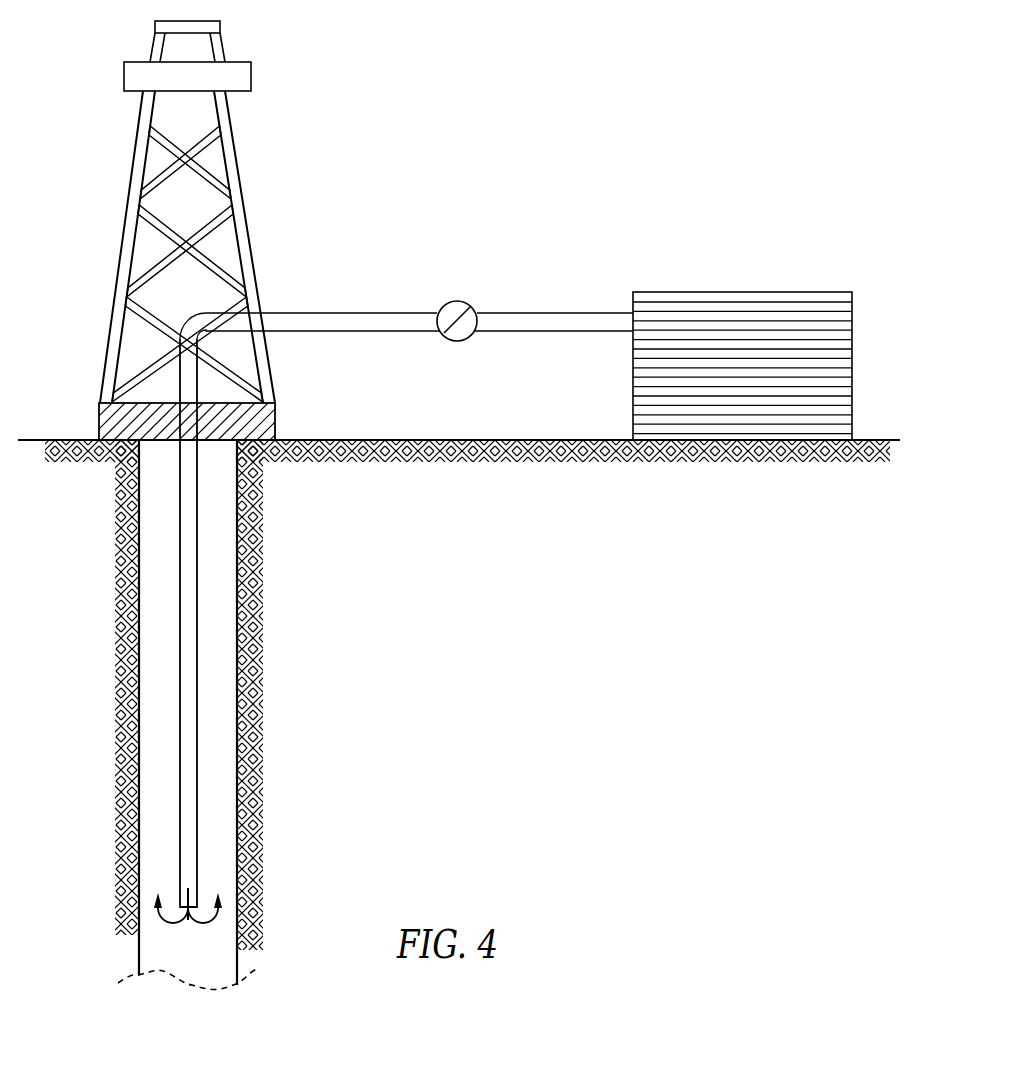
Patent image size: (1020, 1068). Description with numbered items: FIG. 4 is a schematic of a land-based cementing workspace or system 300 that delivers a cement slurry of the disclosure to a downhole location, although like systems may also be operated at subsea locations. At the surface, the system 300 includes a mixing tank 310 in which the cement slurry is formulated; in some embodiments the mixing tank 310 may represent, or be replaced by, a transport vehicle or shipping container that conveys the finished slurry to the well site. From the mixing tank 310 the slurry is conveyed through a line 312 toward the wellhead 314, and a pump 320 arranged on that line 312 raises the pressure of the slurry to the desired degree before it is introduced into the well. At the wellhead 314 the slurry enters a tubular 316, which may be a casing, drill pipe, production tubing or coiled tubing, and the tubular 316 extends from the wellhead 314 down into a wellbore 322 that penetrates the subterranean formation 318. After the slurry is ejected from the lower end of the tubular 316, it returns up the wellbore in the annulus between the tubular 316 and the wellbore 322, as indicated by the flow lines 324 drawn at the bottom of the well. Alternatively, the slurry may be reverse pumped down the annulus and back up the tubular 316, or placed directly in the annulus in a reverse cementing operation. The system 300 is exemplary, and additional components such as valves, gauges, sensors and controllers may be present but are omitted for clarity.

The cementing workspace or system 300 is at (612, 99).
The mixing tank 310 is at (735, 292).
The line 312 is at (368, 313).
The wellhead 314 is at (98, 425).
The tubular 316 is at (198, 592).
The subterranean formation 318 is at (96, 601).
The pump 320 is at (462, 301).
The wellbore 322 is at (240, 768).
The flow lines 324 is at (158, 918).